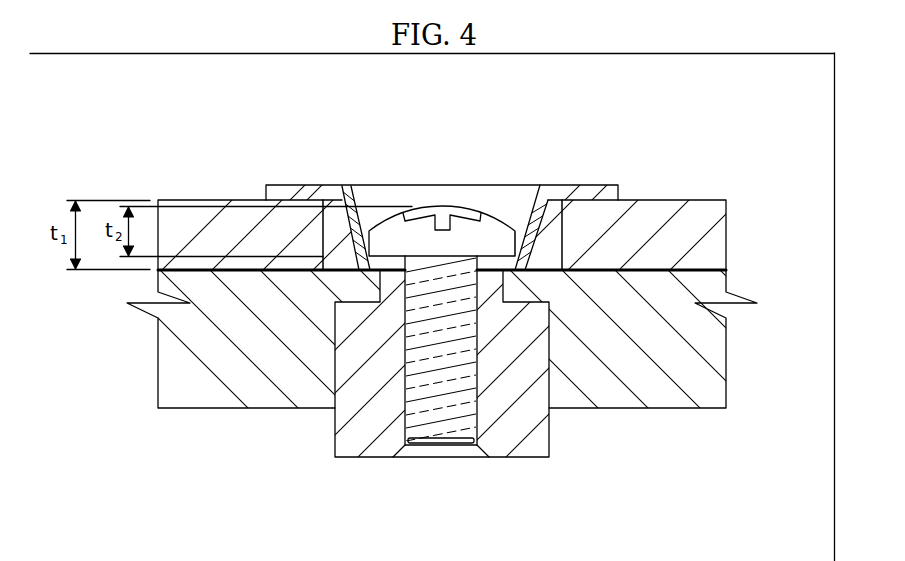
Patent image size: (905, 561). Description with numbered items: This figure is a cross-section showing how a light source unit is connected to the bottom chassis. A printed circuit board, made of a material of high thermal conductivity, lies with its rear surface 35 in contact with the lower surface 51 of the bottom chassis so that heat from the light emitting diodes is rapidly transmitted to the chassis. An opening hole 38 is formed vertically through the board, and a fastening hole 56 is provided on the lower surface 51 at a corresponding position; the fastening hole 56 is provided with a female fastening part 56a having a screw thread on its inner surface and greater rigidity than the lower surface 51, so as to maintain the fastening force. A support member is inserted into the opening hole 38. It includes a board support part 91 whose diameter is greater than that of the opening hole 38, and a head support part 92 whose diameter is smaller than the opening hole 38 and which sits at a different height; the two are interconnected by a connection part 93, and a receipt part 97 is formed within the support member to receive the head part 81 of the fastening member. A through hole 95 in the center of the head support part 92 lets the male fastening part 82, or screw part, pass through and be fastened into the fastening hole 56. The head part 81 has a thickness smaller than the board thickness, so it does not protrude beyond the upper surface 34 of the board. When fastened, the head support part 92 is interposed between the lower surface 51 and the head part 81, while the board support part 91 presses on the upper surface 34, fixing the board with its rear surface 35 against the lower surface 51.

The upper surface 34 is at (679, 200).
The rear surface 35 is at (647, 270).
The opening hole 38 is at (552, 258).
The lower surface 51 is at (697, 364).
The fastening hole 56 is at (473, 427).
The female fastening part 56a is at (525, 445).
The head part 81 is at (464, 224).
The male fastening part 82 is at (418, 406).
The board support part 91 is at (300, 190).
The head support part 92 is at (495, 257).
The connection part 93 is at (524, 260).
The through hole 95 is at (405, 260).
The receipt part 97 is at (377, 193).